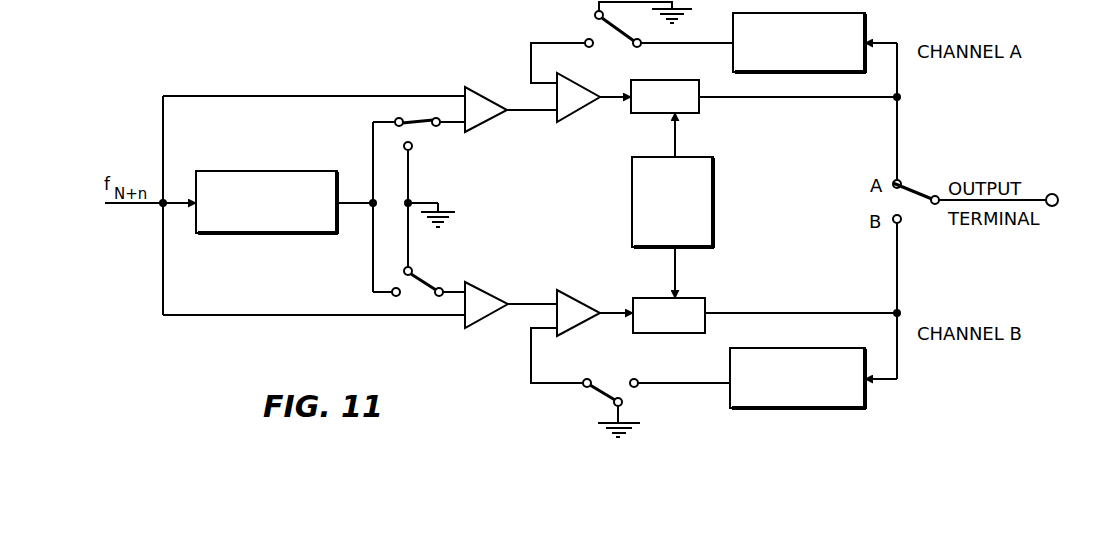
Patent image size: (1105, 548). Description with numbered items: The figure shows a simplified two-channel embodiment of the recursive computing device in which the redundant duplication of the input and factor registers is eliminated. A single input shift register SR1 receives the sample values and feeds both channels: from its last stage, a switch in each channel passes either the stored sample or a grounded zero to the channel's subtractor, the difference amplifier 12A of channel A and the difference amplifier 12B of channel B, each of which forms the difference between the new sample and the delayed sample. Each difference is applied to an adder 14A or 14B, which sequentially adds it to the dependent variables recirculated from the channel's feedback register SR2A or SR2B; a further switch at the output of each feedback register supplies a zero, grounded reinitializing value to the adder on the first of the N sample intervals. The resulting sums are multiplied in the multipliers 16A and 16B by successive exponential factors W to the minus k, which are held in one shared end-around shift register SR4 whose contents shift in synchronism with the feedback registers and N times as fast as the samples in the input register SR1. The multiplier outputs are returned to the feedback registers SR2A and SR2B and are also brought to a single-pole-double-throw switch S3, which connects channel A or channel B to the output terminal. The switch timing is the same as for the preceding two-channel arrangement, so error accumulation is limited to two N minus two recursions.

The input shift register SR1 is at (234, 171).
The subtractor 12A is at (481, 92).
The subtractor 12B is at (492, 318).
The adder 14A is at (584, 112).
The adder 14B is at (582, 302).
The multiplier 16A is at (700, 110).
The multiplier 16B is at (702, 280).
The recirculating shift register SR4 is at (630, 208).
The feedback register SR2A is at (866, 24).
The feedback register SR2B is at (814, 325).
The single-pole-double-throw switch S3 is at (920, 196).